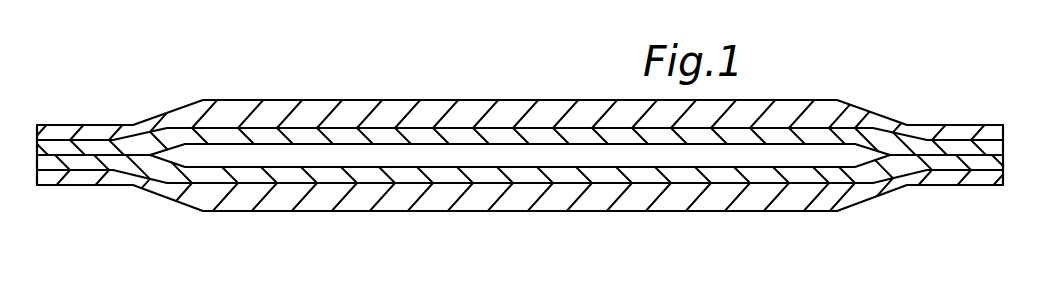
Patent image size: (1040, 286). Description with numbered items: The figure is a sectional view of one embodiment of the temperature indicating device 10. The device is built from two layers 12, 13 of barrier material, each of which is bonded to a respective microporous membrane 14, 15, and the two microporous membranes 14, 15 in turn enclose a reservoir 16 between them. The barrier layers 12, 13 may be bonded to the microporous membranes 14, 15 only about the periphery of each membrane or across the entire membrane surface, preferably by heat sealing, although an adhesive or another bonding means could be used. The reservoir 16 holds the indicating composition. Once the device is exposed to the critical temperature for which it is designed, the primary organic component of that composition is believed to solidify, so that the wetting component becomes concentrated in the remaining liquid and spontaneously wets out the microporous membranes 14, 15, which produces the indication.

The temperature indicating device 10 is at (397, 68).
The barrier layer 12 is at (185, 115).
The barrier layer 13 is at (870, 188).
The microporous membrane 14 is at (232, 137).
The microporous membrane 15 is at (742, 173).
The reservoir 16 is at (593, 150).